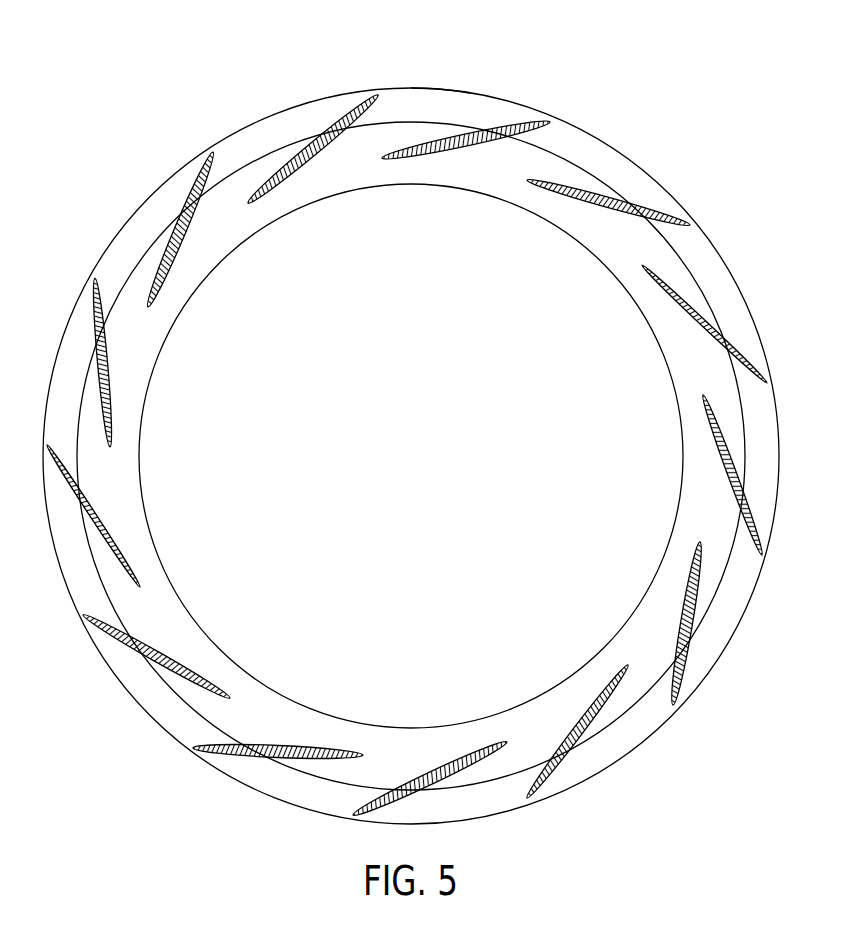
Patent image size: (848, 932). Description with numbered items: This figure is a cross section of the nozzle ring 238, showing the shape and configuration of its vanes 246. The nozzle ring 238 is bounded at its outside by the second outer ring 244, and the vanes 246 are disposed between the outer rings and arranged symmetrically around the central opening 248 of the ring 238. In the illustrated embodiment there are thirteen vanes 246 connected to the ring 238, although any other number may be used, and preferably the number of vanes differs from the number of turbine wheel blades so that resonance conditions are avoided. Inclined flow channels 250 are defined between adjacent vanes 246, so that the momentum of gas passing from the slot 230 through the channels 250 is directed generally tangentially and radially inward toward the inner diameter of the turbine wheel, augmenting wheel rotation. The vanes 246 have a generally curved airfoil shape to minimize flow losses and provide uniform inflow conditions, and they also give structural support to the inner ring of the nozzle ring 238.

The nozzle ring 238 is at (411, 428).
The second outer ring 244 is at (145, 212).
The central opening 248 is at (568, 635).
The slot 230 is at (165, 307).
The vanes 246 is at (313, 142).
The inclined flow channels 250 is at (410, 110).